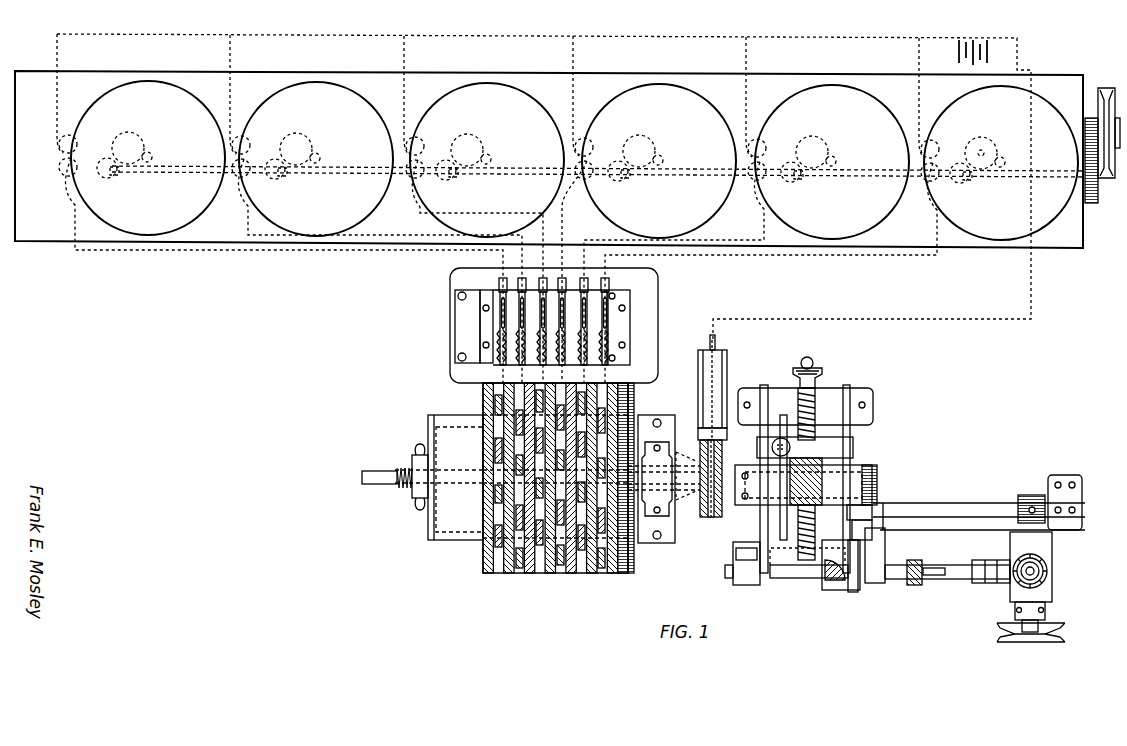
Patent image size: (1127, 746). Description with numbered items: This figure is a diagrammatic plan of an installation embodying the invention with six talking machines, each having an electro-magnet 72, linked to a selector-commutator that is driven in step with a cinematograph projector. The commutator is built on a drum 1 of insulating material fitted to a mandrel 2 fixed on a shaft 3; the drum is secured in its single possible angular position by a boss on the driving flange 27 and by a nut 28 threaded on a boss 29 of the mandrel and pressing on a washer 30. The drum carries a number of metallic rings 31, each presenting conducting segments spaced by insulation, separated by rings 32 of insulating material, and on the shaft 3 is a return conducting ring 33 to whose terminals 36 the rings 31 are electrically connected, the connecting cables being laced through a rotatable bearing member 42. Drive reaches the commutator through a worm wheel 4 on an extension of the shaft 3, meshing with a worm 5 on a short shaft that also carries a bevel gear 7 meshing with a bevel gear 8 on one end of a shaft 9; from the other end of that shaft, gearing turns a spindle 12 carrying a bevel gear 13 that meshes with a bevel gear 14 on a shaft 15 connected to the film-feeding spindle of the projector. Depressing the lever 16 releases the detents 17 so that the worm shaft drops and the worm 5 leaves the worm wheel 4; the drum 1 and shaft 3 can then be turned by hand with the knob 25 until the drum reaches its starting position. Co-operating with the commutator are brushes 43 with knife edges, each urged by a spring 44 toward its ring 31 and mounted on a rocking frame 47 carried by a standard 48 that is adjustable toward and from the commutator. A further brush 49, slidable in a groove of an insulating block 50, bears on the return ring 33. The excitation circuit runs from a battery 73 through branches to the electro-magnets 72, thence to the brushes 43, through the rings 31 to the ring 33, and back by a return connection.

The drum 1 is at (538, 510).
The mandrel 2 is at (455, 477).
The shaft 3 is at (461, 485).
The worm wheel 4 is at (812, 412).
The worm 5 is at (806, 496).
The bevel gear 7 is at (792, 576).
The bevel gear 8 is at (830, 582).
The shaft 9 is at (890, 568).
The spindle 12 is at (1044, 569).
The bevel gear 13 is at (1046, 580).
The bevel gear 14 is at (1013, 592).
The shaft 15 is at (1030, 642).
The lever 16 is at (811, 363).
The detents 17 is at (766, 372).
The knob 25 is at (878, 481).
The driving flange 27 is at (630, 560).
The nut 28 is at (416, 498).
The boss 29 is at (415, 466).
The washer 30 is at (438, 540).
The metallic rings 31 is at (610, 573).
The insulating rings 32 is at (531, 573).
The return conducting ring 33 is at (710, 518).
The terminals 36 is at (688, 472).
The rotatable bearing member 42 is at (670, 545).
The brushes 43 is at (522, 285).
The spring 44 is at (545, 343).
The rocking frame 47 is at (467, 303).
The standard 48 is at (631, 327).
The brush 49 is at (714, 336).
The block 50 is at (726, 437).
The electro-magnets 72 is at (246, 200).
The battery 73 is at (960, 42).